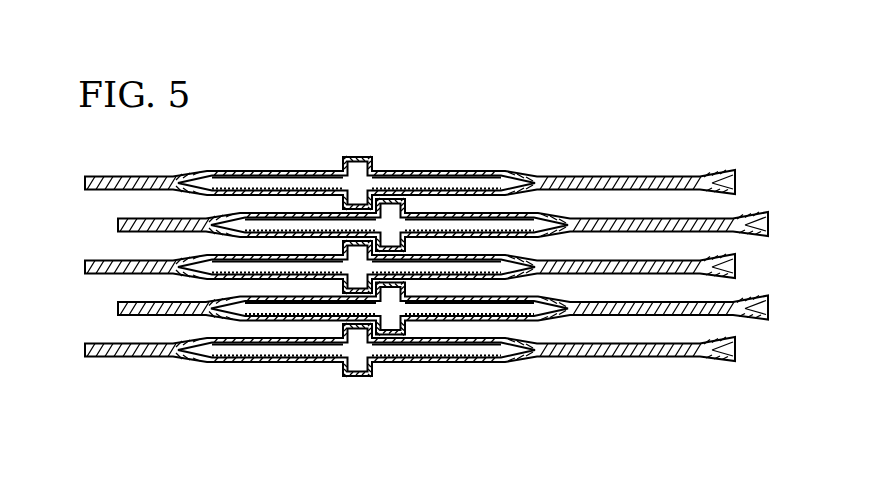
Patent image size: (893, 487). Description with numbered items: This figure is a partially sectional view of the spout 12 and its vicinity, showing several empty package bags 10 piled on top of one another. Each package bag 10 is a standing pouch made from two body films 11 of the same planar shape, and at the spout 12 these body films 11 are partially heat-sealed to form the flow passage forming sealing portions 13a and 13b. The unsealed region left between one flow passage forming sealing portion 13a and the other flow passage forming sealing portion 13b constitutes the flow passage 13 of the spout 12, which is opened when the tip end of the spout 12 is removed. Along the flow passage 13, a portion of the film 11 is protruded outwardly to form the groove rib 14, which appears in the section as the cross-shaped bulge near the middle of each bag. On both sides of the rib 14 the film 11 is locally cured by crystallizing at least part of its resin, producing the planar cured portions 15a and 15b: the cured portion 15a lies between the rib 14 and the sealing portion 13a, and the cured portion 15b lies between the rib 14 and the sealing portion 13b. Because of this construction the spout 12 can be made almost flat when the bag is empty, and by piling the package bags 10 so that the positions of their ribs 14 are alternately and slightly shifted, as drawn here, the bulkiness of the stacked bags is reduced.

The package bag 10 is at (634, 249).
The body film 11 is at (730, 324).
The spout 12 is at (108, 303).
The flow passage 13 is at (333, 352).
The flow passage forming sealing portion 13a is at (118, 357).
The flow passage forming sealing portion 13b is at (590, 355).
The groove rib 14 is at (388, 334).
The cured portion 15a is at (284, 322).
The cured portion 15b is at (437, 364).